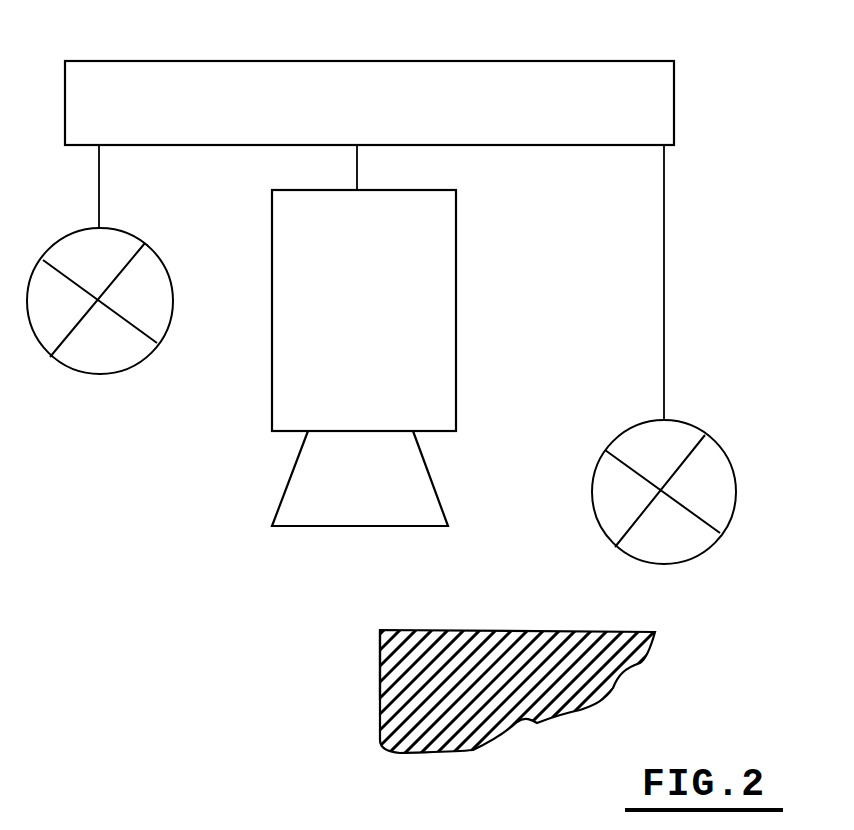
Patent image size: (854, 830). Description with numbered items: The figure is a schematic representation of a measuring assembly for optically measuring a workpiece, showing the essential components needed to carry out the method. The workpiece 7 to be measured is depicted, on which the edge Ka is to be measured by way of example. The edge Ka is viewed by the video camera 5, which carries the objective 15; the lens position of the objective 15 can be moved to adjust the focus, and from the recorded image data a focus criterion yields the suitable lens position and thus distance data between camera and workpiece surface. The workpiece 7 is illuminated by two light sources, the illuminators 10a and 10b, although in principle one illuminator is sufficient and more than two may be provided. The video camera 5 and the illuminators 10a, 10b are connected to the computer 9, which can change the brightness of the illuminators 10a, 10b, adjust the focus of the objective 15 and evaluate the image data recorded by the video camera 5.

The computer 9 is at (518, 95).
The illuminator 10b is at (150, 266).
The illuminator 10a is at (711, 460).
The video camera 5 is at (435, 352).
The objective 15 is at (407, 488).
The workpiece 7 is at (578, 638).
The edge Ka is at (379, 630).